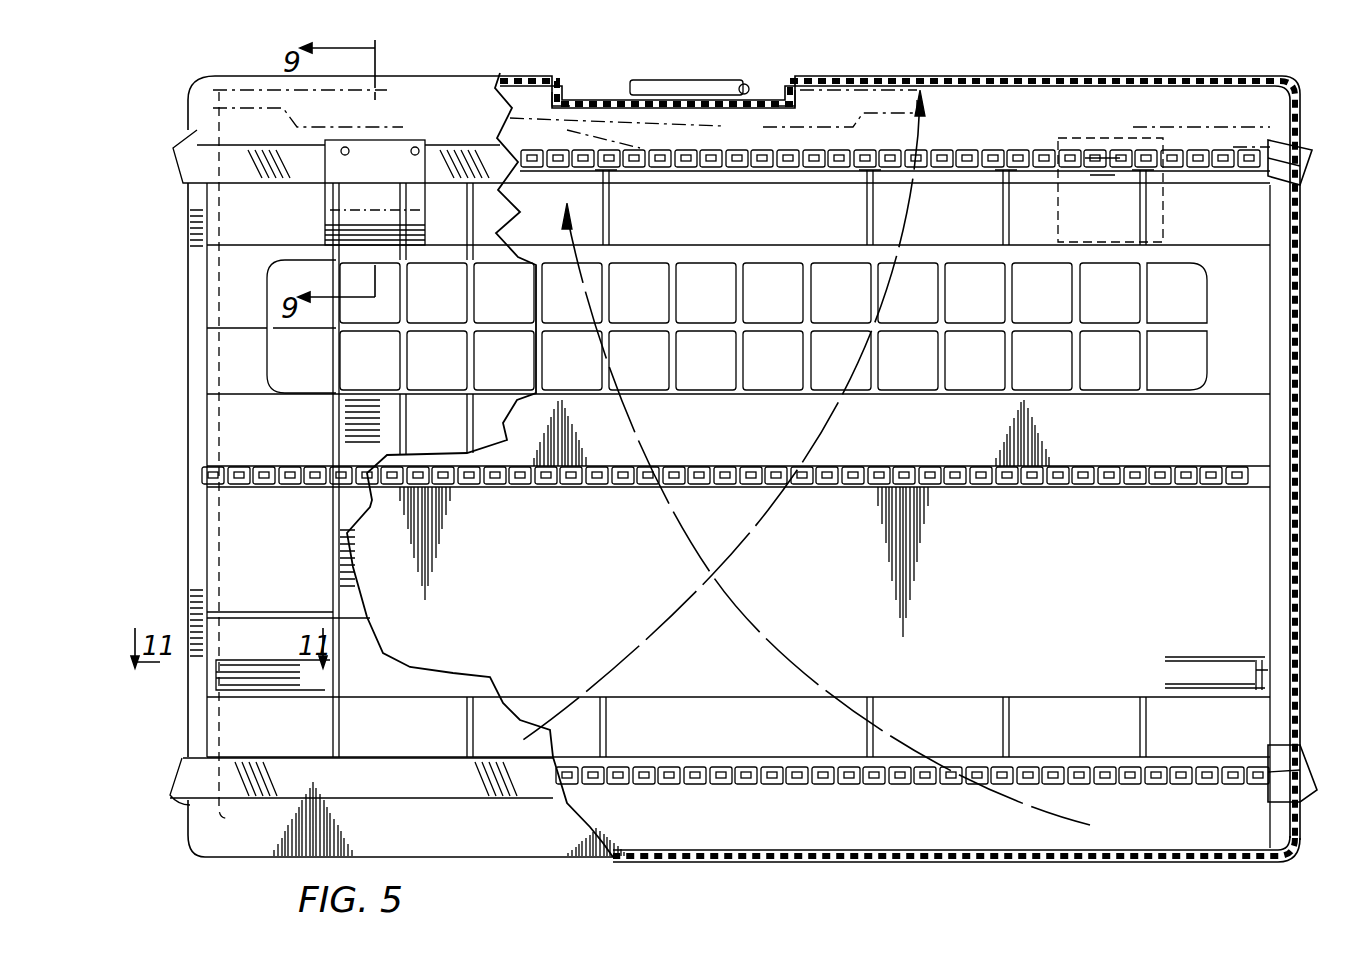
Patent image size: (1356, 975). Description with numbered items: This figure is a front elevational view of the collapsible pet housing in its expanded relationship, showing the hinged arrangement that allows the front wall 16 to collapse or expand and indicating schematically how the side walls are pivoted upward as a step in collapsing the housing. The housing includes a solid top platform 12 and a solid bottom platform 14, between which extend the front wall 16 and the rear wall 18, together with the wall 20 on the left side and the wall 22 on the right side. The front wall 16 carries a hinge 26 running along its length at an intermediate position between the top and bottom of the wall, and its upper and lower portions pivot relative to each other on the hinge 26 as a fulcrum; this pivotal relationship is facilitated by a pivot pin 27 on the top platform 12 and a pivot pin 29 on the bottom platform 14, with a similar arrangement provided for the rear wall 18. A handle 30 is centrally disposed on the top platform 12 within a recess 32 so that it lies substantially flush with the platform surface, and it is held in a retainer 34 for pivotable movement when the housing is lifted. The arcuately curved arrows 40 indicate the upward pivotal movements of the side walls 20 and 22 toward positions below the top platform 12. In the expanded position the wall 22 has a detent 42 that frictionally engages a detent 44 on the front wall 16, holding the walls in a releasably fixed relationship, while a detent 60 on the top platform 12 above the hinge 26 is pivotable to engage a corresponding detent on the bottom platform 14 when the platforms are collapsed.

The top platform 12 is at (1258, 78).
The bottom platform 14 is at (1035, 862).
The front wall 16 is at (737, 558).
The rear wall 18 is at (738, 465).
The left side wall 20 is at (510, 118).
The right side wall 22 is at (205, 300).
The hinge 26 is at (1152, 487).
The pivot pin 27 is at (972, 170).
The pivot pin 29 is at (1022, 776).
The handle 30 is at (668, 88).
The recess 32 is at (558, 92).
The retainer 34 is at (760, 95).
The arcuately curved arrows 40 is at (818, 436).
The detent 42 is at (1240, 678).
The detent 44 is at (1258, 665).
The detent 60 is at (370, 185).